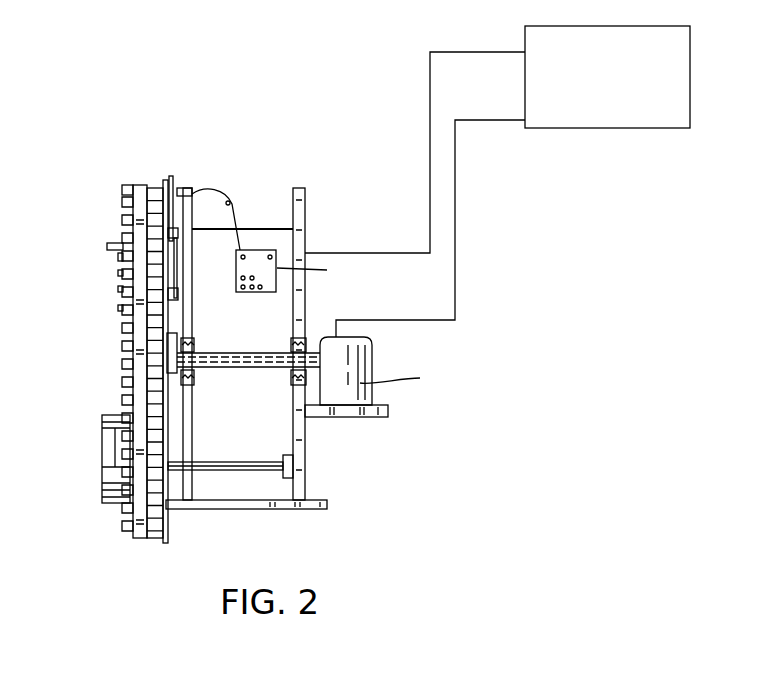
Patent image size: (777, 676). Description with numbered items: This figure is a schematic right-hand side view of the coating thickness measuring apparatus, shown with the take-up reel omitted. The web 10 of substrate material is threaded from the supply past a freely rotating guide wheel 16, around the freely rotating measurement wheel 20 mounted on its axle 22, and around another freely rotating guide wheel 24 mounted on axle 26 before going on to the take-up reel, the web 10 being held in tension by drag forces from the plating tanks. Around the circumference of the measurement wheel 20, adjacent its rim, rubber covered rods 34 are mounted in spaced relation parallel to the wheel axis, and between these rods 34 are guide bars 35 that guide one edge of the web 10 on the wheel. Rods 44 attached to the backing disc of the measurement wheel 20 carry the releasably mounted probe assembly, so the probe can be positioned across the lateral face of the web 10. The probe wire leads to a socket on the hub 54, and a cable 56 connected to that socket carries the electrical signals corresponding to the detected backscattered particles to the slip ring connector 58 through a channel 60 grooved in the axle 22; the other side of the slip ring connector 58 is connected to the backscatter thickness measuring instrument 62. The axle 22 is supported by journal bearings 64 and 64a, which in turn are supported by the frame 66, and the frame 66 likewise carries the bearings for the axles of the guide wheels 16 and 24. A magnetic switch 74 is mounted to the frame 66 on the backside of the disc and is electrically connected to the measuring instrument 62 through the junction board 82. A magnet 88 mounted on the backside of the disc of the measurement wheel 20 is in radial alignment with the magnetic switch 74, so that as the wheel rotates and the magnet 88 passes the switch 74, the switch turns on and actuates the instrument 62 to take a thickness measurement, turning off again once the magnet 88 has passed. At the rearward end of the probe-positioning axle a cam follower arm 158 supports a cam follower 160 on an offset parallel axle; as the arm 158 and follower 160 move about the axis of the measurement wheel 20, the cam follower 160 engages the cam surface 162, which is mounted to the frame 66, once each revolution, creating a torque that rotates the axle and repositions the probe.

The web 10 is at (122, 190).
The guide wheel 16 is at (177, 192).
The measurement wheel 20 is at (116, 375).
The axle 22 is at (261, 353).
The guide wheel 24 is at (110, 462).
The axle 26 is at (270, 445).
The rubber covered rods 34 is at (122, 288).
The guide bars 35 is at (160, 471).
The rods 44 is at (107, 246).
The hub 54 is at (130, 351).
The cable 56 is at (260, 362).
The slip ring connector 58 is at (365, 363).
The channel 60 is at (245, 353).
The backscatter thickness measuring instrument 62 is at (691, 77).
The journal bearing 64 is at (291, 385).
The journal bearing 64a is at (212, 337).
The frame 66 is at (282, 228).
The magnetic switch 74 is at (188, 190).
The junction board 82 is at (253, 268).
The magnet 88 is at (176, 236).
The cam follower arm 158 is at (122, 309).
The cam follower 160 is at (170, 296).
The cam surface 162 is at (122, 258).